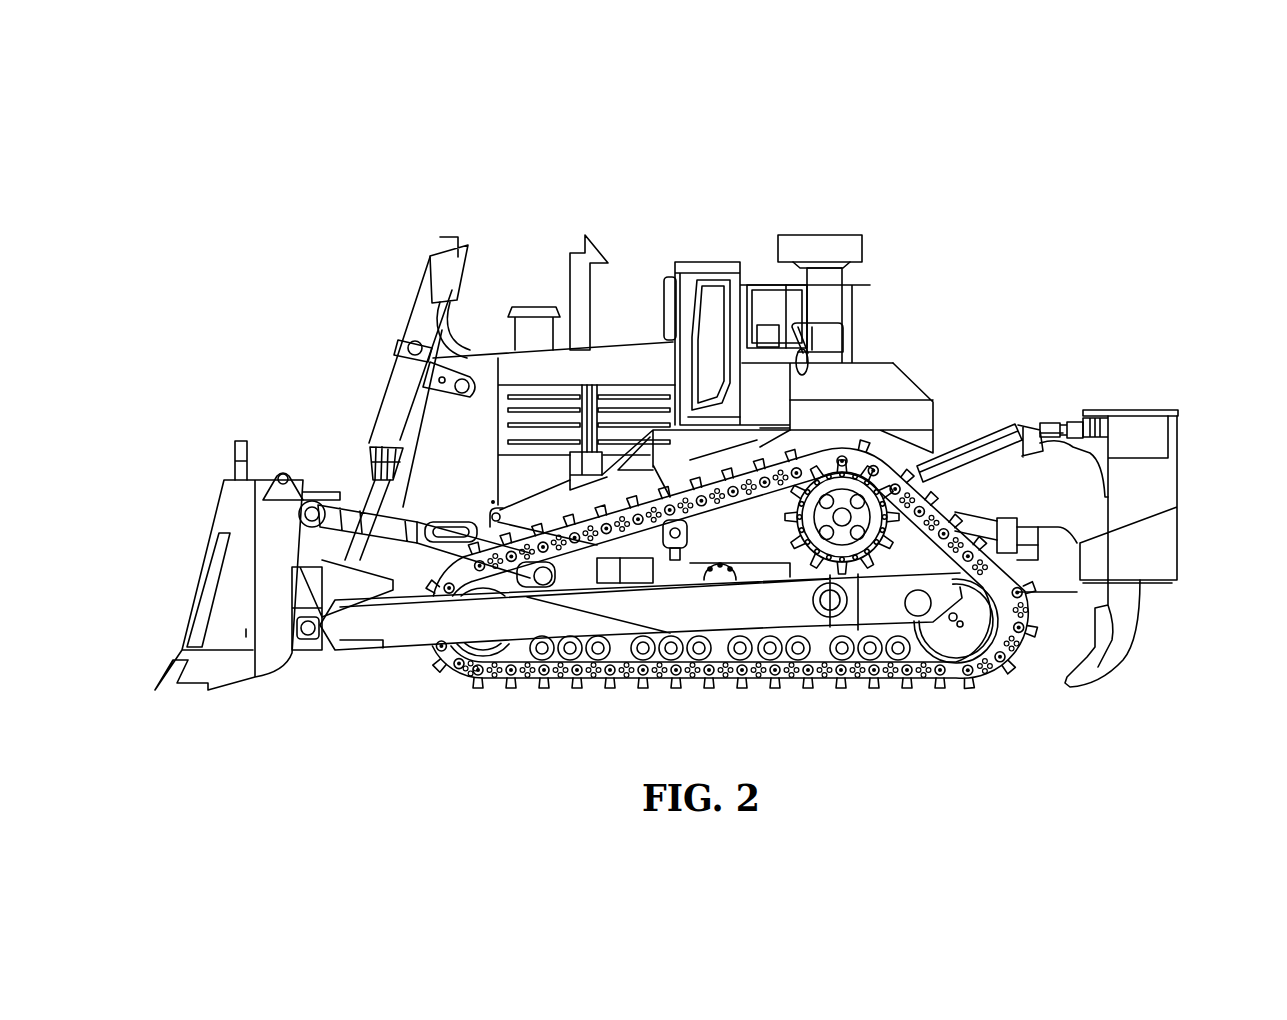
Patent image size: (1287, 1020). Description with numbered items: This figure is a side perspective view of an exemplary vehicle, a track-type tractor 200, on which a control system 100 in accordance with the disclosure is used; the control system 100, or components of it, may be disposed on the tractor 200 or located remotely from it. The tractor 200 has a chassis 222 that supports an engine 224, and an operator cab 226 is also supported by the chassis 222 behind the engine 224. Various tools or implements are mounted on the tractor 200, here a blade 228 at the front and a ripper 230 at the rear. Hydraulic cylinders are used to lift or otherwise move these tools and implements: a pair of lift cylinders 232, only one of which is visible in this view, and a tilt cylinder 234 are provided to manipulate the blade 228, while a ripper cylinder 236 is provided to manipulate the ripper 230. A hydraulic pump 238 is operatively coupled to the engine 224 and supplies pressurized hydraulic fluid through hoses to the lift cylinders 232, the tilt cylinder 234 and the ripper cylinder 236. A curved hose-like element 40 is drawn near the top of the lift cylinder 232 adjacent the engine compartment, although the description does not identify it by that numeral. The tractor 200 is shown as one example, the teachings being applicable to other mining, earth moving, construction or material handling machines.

The track-type tractor 200 is at (866, 192).
The control system 100 is at (766, 323).
The hose 40 is at (448, 343).
The chassis 222 is at (527, 490).
The engine 224 is at (562, 418).
The operator cab 226 is at (713, 318).
The blade 228 is at (228, 663).
The ripper 230 is at (1130, 478).
The lift cylinder 232 is at (398, 403).
The tilt cylinder 234 is at (348, 493).
The ripper cylinder 236 is at (988, 457).
The hydraulic pump 238 is at (605, 452).